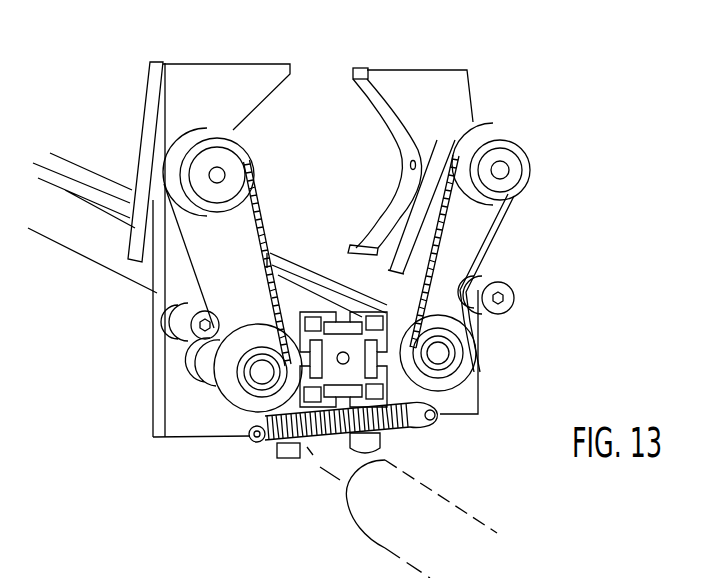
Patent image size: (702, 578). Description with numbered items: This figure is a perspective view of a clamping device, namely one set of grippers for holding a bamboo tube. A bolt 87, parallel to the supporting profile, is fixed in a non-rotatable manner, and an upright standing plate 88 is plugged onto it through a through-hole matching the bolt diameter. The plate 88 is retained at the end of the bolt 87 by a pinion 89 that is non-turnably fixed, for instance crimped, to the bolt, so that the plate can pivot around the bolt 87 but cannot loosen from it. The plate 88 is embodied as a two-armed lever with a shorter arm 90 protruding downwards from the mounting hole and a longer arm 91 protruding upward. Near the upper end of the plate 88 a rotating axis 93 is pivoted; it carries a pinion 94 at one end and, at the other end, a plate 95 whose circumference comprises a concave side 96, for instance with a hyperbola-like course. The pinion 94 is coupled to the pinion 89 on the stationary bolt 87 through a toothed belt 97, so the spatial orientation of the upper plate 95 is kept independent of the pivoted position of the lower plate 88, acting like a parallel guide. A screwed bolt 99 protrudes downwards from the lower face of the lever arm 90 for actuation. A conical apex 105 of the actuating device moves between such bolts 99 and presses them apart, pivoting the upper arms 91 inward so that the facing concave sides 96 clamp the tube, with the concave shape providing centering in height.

The bolt 87 is at (250, 386).
The upright standing plate 88 is at (177, 393).
The pinion 89 is at (227, 395).
The shorter arm 90 is at (177, 423).
The longer arm 91 is at (157, 291).
The rotating axis 93 is at (222, 175).
The pinion 94 is at (157, 122).
The plate 95 is at (235, 72).
The concave side 96 is at (350, 85).
The toothed belt 97 is at (262, 218).
The screwed bolt 99 is at (283, 460).
The conical apex 105 is at (342, 478).